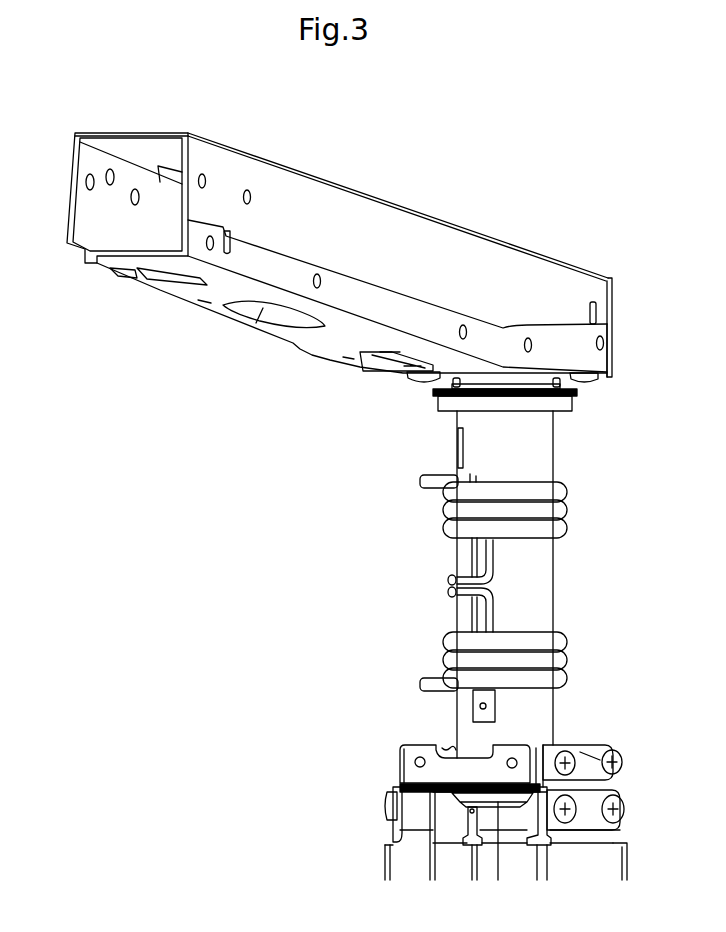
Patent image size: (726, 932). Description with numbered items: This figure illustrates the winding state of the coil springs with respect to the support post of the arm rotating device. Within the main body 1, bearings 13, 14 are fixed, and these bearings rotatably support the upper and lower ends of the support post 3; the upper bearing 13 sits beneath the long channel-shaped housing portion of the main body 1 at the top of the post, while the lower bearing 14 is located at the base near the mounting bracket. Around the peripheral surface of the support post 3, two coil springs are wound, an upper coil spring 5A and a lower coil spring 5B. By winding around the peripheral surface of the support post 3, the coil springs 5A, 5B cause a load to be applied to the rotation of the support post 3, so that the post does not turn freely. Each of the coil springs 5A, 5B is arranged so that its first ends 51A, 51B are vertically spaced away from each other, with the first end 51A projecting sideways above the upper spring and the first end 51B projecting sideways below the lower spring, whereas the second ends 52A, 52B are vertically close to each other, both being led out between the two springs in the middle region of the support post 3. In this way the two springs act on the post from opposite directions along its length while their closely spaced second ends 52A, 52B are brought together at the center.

The main body 1 is at (400, 764).
The support post 3 is at (556, 588).
The upper coil spring 5A is at (568, 512).
The lower coil spring 5B is at (568, 660).
The bearing 13 is at (572, 403).
The bearing 14 is at (437, 792).
The first end of the upper coil spring 51A is at (421, 478).
The first end of the lower coil spring 51B is at (421, 686).
The second end of the upper coil spring 52A is at (449, 578).
The second end of the lower coil spring 52B is at (449, 594).